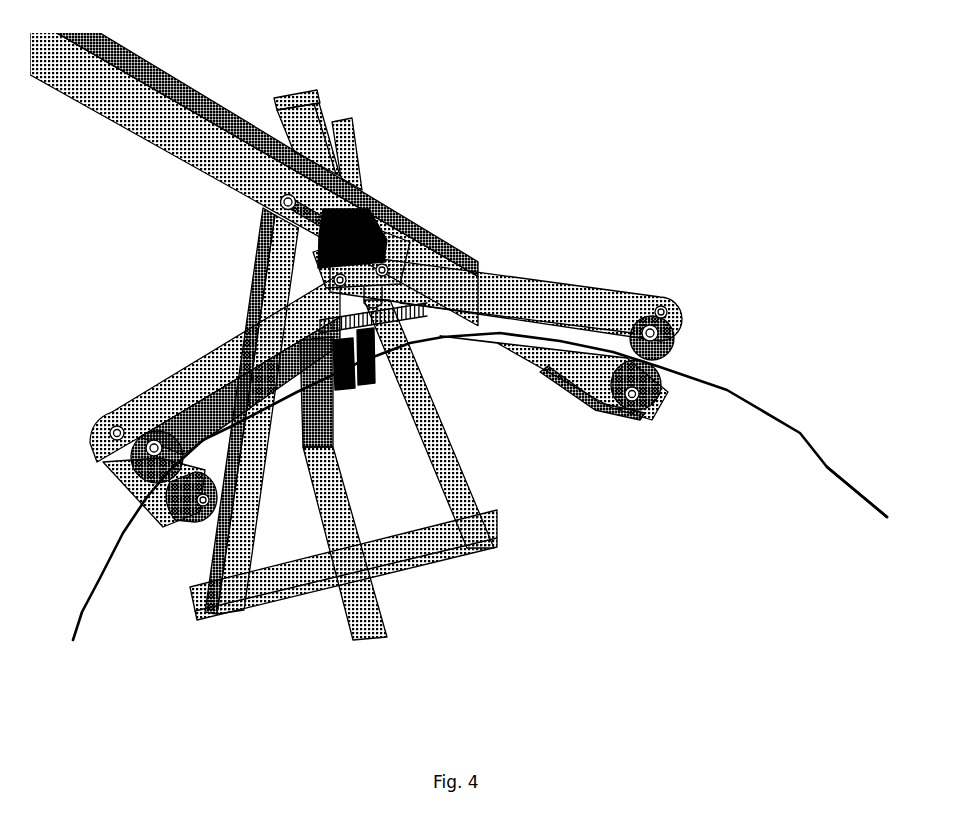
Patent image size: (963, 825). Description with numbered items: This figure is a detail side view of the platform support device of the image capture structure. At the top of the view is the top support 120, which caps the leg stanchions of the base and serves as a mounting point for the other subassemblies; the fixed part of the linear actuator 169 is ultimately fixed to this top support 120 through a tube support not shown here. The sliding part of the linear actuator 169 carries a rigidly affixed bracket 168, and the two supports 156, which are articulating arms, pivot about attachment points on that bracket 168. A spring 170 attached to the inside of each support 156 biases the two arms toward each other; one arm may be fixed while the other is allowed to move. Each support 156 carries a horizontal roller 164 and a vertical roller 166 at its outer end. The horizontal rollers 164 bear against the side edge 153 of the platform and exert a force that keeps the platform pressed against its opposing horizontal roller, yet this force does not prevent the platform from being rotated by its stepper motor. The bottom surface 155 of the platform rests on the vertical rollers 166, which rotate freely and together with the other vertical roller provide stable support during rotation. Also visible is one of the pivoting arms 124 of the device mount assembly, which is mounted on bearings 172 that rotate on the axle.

The top support 120 is at (319, 105).
The pivoting arm 124 is at (190, 172).
The side edge 153 is at (743, 397).
The bottom surface 155 is at (847, 520).
The support 156 is at (386, 389).
The horizontal roller 164 is at (710, 301).
The vertical roller 166 is at (140, 501).
The bracket 168 is at (417, 228).
The linear actuator 169 is at (367, 216).
The spring 170 is at (247, 293).
The bearing 172 is at (303, 208).